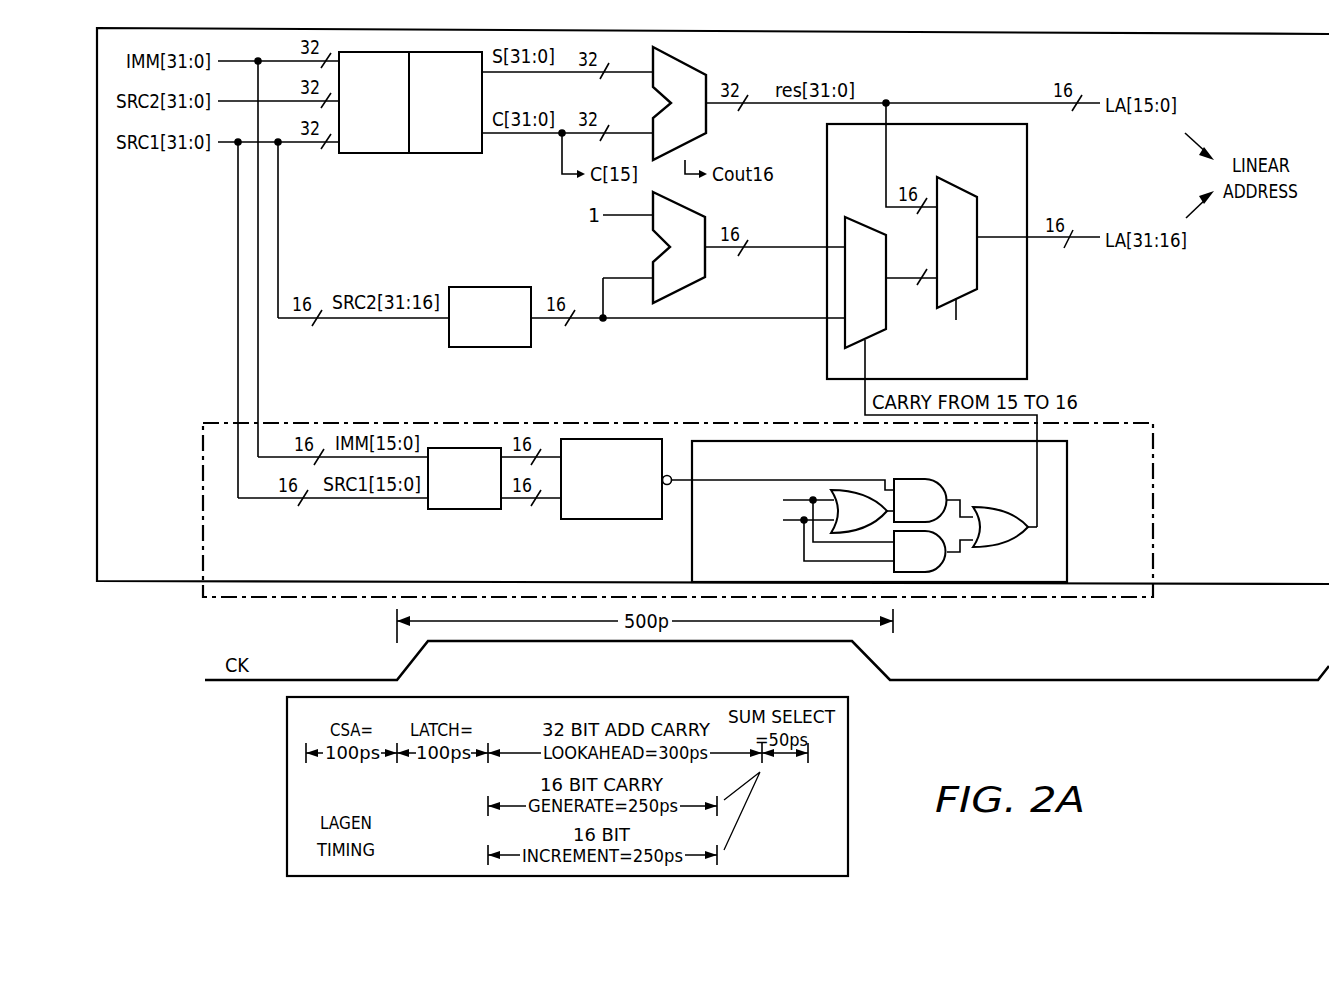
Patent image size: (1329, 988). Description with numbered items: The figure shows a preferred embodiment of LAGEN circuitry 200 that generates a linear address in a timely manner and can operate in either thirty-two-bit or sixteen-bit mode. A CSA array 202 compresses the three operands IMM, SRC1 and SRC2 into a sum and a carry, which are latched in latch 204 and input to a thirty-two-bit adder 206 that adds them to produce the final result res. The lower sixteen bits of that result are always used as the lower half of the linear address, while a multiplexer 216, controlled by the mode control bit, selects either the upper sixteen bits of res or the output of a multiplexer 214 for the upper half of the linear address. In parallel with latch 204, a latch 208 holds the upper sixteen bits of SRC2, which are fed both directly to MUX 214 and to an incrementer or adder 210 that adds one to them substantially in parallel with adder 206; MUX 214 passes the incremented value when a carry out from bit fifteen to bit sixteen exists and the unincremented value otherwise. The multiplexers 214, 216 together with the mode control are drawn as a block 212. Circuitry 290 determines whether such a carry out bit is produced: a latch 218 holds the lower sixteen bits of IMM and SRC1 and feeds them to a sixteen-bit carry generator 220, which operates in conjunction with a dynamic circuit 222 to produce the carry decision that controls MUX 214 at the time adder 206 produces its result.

The LAGEN circuitry 200 is at (1200, 585).
The CSA array 202 is at (366, 157).
The latch 204 is at (439, 157).
The 32-bit adder 206 is at (707, 80).
The latch 208 is at (490, 287).
The incrementer or adder 210 is at (705, 273).
The mux block / mode control 212 is at (1027, 178).
The multiplexer (MUX) 214 is at (868, 219).
The multiplexer (MUX) 216 is at (955, 180).
The latch 218 is at (460, 512).
The 16-bit carry generator 220 is at (590, 521).
The dynamic circuit 222 is at (1067, 514).
The circuitry for determining a carry out bit 290 is at (1155, 447).